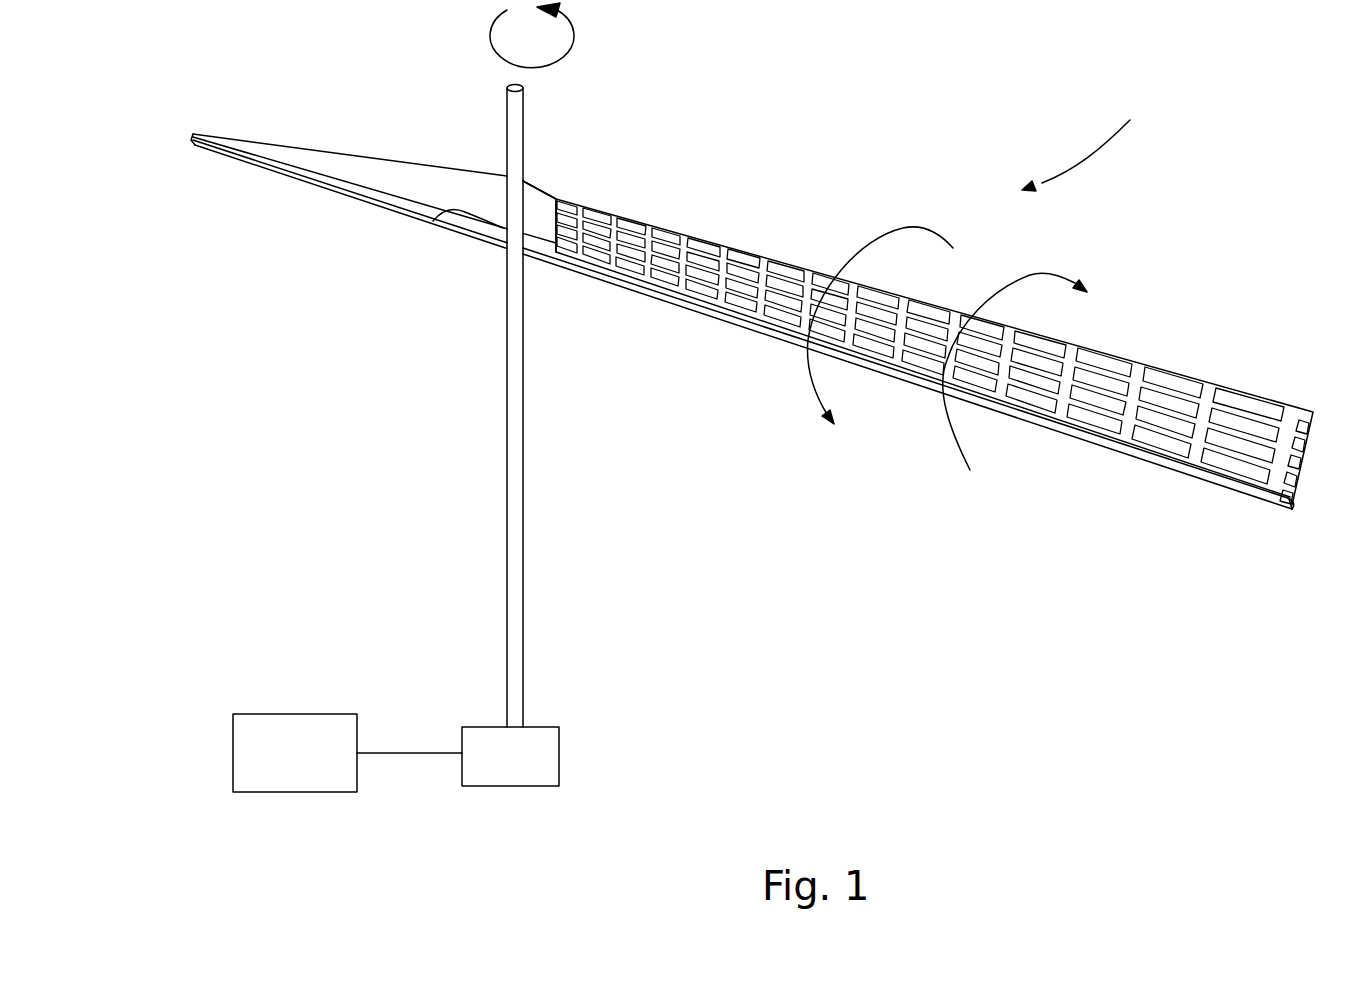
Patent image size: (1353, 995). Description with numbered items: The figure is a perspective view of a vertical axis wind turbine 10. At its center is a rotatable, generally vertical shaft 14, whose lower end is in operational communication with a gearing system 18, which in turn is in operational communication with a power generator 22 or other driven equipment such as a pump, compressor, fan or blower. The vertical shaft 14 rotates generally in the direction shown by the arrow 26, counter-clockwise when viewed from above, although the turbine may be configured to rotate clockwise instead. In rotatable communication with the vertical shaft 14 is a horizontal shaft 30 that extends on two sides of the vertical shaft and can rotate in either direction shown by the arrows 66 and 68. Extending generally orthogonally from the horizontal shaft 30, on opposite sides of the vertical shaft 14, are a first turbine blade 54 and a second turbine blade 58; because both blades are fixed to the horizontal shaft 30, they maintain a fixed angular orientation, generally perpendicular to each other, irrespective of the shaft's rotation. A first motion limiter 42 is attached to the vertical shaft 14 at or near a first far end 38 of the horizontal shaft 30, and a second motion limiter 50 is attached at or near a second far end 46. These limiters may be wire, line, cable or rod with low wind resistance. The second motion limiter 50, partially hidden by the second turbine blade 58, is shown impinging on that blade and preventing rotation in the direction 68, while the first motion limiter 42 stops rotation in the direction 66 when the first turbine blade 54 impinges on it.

The vertical axis wind turbine 10 is at (1092, 145).
The vertical shaft 14 is at (515, 603).
The gearing system 18 is at (528, 765).
The power generator 22 is at (298, 722).
The arrow 26 is at (573, 45).
The horizontal shaft 30 is at (207, 149).
The first far end 38 is at (192, 133).
The first motion limiter 42 is at (353, 155).
The second far end 46 is at (1295, 508).
The second motion limiter 50 is at (547, 190).
The first turbine blade 54 is at (433, 222).
The second turbine blade 58 is at (667, 245).
The arrow (rotation direction) 66 is at (897, 226).
The arrow (rotation direction) 68 is at (1032, 270).